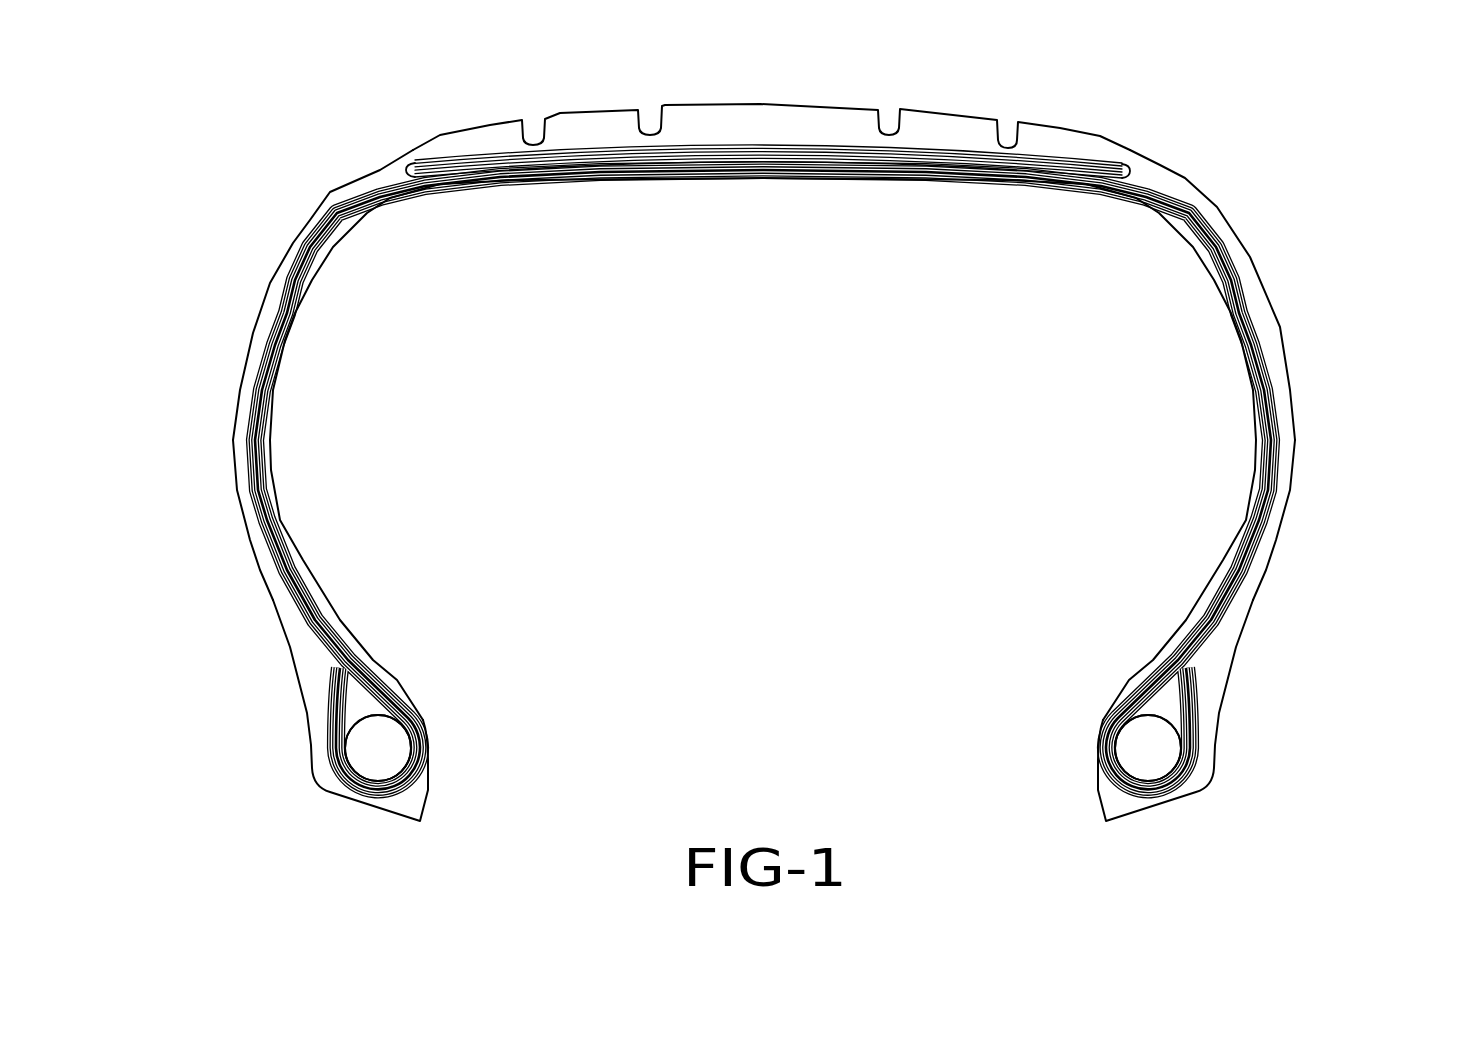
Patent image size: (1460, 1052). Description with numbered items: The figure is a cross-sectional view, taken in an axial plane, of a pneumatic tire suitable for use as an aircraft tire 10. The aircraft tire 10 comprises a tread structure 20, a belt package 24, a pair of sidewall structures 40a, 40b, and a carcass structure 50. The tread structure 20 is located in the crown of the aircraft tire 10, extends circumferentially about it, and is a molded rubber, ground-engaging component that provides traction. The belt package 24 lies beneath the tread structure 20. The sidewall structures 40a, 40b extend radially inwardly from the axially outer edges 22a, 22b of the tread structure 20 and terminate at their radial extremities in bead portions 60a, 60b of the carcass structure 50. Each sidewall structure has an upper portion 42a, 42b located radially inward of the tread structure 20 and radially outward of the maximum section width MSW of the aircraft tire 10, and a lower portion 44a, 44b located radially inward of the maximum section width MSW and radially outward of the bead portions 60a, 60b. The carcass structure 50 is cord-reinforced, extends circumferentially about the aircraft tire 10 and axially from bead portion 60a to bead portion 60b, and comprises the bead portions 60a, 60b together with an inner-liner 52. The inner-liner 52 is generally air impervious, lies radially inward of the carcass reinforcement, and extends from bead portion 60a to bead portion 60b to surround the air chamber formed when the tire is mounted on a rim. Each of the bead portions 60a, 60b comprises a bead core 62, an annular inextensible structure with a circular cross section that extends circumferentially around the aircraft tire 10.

The aircraft tire 10 is at (1392, 148).
The tread structure 20 is at (565, 108).
The axially outer edge of the tread structure 22a is at (410, 173).
The axially outer edge of the tread structure 22b is at (1125, 175).
The belt package 24 is at (440, 147).
The sidewall structure 40a is at (232, 372).
The sidewall structure 40b is at (1303, 375).
The upper portion of sidewall structure 42a is at (270, 283).
The upper portion of sidewall structure 42b is at (1268, 287).
The lower portion of sidewall structure 44a is at (253, 557).
The lower portion of sidewall structure 44b is at (1278, 560).
The carcass structure 50 is at (460, 757).
The inner-liner 52 is at (423, 722).
The bead portion 60a is at (332, 790).
The bead portion 60b is at (1205, 796).
The bead core 62 is at (388, 762).
The maximum section width MSW is at (233, 443).